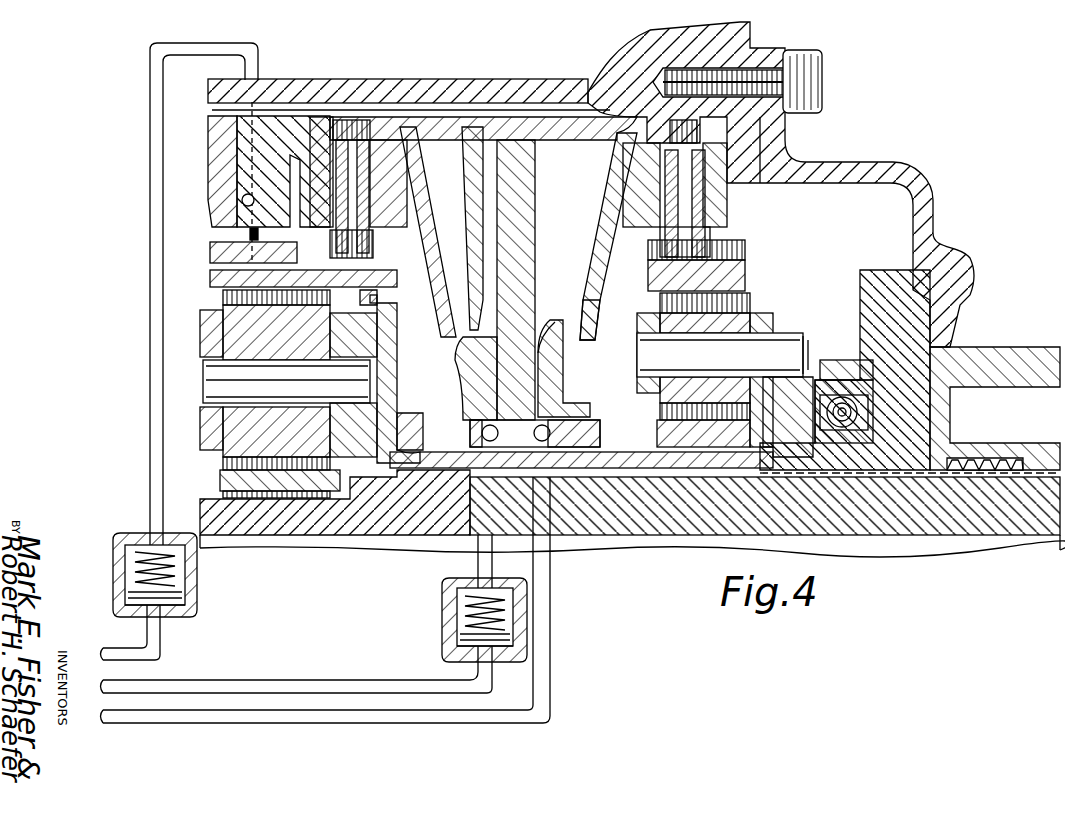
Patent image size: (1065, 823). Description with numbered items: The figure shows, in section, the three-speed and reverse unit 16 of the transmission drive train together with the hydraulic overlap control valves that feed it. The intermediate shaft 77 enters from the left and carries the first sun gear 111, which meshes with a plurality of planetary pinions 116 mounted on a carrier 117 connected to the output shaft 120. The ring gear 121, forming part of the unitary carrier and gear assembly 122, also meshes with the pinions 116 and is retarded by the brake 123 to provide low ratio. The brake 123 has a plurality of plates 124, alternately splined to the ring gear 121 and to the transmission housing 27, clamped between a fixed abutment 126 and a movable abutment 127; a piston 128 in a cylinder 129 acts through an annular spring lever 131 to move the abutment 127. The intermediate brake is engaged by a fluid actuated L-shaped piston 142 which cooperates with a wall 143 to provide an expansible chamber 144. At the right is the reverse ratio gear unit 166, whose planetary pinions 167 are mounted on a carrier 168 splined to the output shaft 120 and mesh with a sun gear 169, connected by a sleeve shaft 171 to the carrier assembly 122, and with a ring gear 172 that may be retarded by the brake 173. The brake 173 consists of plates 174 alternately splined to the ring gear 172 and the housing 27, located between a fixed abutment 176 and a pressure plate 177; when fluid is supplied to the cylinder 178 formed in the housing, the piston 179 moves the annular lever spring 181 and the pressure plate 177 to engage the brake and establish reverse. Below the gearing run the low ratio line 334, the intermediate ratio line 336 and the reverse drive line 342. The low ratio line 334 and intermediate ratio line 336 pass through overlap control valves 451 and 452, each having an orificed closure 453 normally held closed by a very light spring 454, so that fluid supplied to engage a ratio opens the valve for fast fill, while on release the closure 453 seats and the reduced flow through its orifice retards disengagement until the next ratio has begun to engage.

The three-speed and reverse unit 16 is at (438, 86).
The transmission housing 27 is at (520, 92).
The intermediate shaft 77 is at (266, 525).
The first sun gear 111 is at (222, 466).
The planetary pinions 116 is at (230, 330).
The carrier 117 is at (370, 414).
The output shaft 120 is at (677, 510).
The ring gear 121 is at (212, 284).
The carrier and gear assembly 122 is at (398, 346).
The brake 123 is at (352, 130).
The plates 124 is at (370, 148).
The fixed abutment 126 is at (322, 118).
The movable abutment 127 is at (413, 198).
The piston 128 is at (488, 163).
The cylinder 129 is at (464, 340).
The annular spring lever 131 is at (384, 320).
The L-shaped piston 142 is at (216, 186).
The wall 143 is at (275, 120).
The expansible chamber 144 is at (240, 225).
The reverse ratio gear unit 166 is at (752, 284).
The planetary pinions 167 is at (750, 308).
The carrier 168 is at (787, 323).
The sun gear 169 is at (668, 436).
The sleeve shaft 171 is at (654, 466).
The ring gear 172 is at (744, 264).
The brake 173 is at (705, 180).
The plates 174 is at (672, 228).
The fixed abutment 176 is at (720, 200).
The pressure plate 177 is at (636, 206).
The cylinder 178 is at (548, 335).
The piston 179 is at (556, 368).
The annular lever spring 181 is at (598, 288).
The low ratio line 334 is at (206, 683).
The intermediate ratio line 336 is at (154, 646).
The reverse drive line 342 is at (146, 722).
The overlap control valve 451 is at (446, 598).
The overlap control valve 452 is at (113, 567).
The orificed closure 453 is at (527, 627).
The spring 454 is at (460, 626).